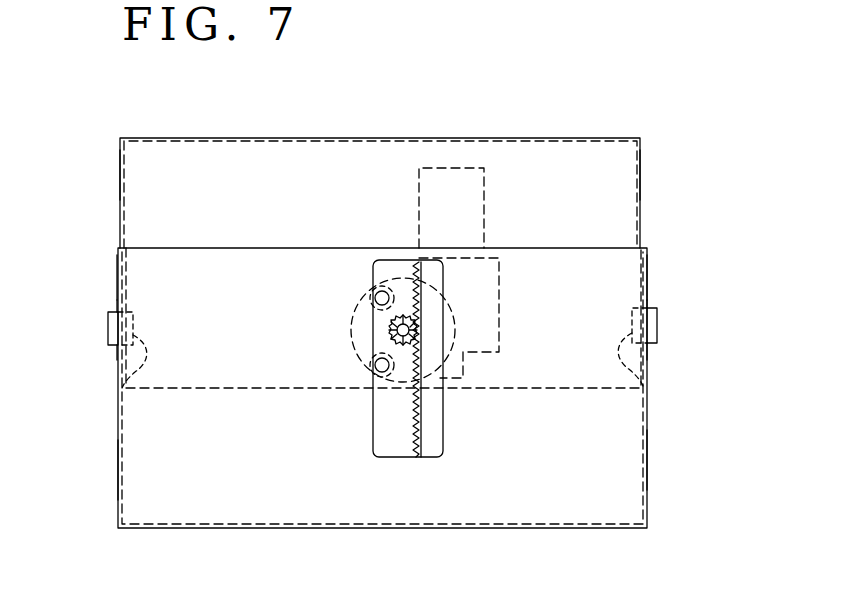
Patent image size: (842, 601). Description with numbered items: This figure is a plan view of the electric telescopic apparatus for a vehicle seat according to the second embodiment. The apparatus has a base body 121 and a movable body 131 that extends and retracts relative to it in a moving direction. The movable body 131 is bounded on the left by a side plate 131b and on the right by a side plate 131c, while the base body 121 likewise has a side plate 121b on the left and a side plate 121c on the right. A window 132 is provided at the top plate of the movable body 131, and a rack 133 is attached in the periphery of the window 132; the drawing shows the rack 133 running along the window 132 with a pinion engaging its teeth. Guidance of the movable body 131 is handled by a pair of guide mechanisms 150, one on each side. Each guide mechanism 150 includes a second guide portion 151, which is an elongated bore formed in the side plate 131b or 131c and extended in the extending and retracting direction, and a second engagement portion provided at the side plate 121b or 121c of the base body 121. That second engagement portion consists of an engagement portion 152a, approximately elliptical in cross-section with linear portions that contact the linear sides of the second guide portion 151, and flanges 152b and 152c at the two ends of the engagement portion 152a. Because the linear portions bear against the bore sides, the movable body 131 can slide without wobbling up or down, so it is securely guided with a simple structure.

The base body 121 is at (443, 118).
The side plate 121b is at (120, 162).
The side plate 121c is at (642, 161).
The movable body 131 is at (324, 533).
The side plate 131b is at (118, 482).
The side plate 131c is at (649, 460).
The window 132 is at (372, 270).
The rack 133 is at (437, 424).
The guide mechanism 150 is at (102, 297).
The second guide portion 151 is at (117, 283).
The engagement portion 152a is at (108, 350).
The flange 152b is at (118, 386).
The flange 152c is at (108, 330).